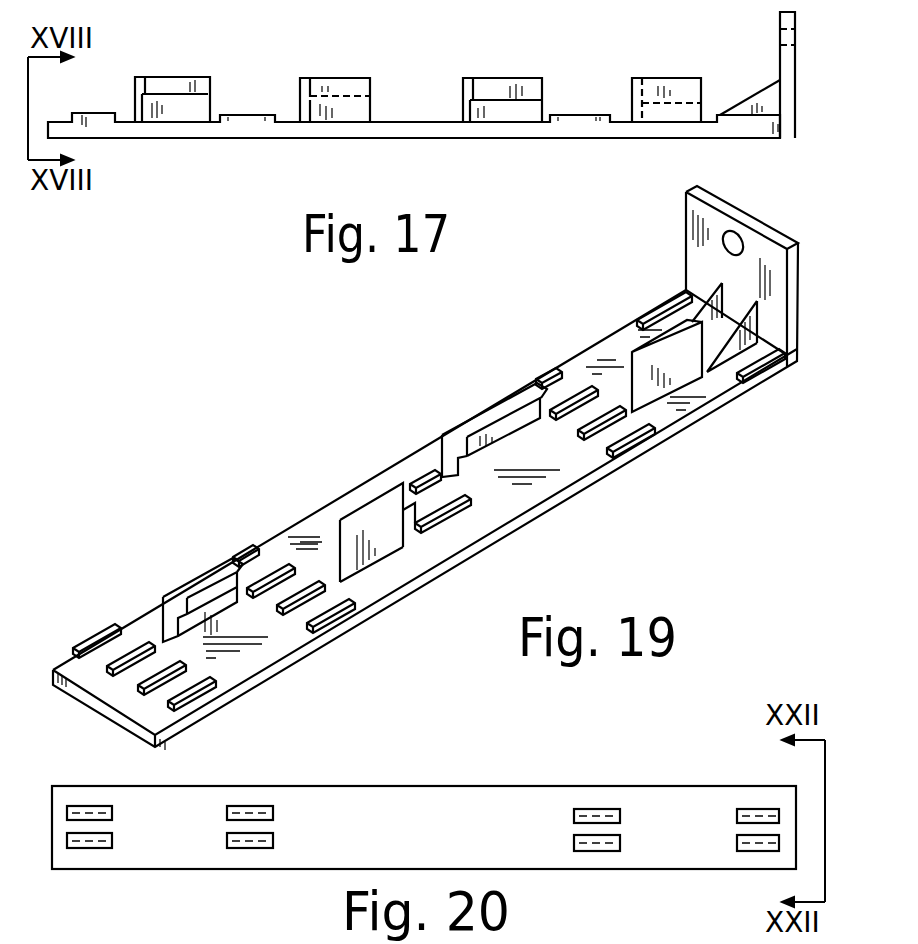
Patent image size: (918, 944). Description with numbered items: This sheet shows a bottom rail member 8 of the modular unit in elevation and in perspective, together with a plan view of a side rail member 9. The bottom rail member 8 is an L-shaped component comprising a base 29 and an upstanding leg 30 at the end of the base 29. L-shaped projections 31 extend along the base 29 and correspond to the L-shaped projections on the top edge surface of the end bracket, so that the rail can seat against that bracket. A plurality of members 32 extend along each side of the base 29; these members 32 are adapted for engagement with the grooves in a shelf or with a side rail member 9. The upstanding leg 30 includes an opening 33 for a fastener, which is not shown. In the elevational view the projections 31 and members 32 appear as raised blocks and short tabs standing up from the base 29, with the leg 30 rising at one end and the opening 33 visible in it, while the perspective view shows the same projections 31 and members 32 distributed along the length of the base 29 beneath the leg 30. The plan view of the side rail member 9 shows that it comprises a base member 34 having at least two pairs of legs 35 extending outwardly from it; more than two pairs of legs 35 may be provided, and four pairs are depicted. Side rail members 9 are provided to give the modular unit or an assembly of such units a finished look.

In FIG. 17, the bottom rail member 8 is at (449, 95).
In FIG. 19, the bottom rail member 8 is at (455, 468).
In FIG. 20, the side rail member 9 is at (424, 833).
In FIG. 17, the base 29 is at (445, 128).
In FIG. 19, the base 29 is at (499, 520).
In FIG. 17, the upstanding leg 30 is at (785, 75).
In FIG. 19, the upstanding leg 30 is at (798, 304).
In FIG. 17, the L-shaped projections 31 is at (327, 78).
In FIG. 19, the L-shaped projections 31 is at (467, 425).
In FIG. 17, the members 32 is at (248, 120).
In FIG. 19, the members 32 is at (328, 613).
In FIG. 17, the opening 33 is at (797, 32).
In FIG. 19, the opening 33 is at (738, 236).
In FIG. 20, the base member 34 is at (427, 849).
In FIG. 20, the legs 35 is at (590, 809).